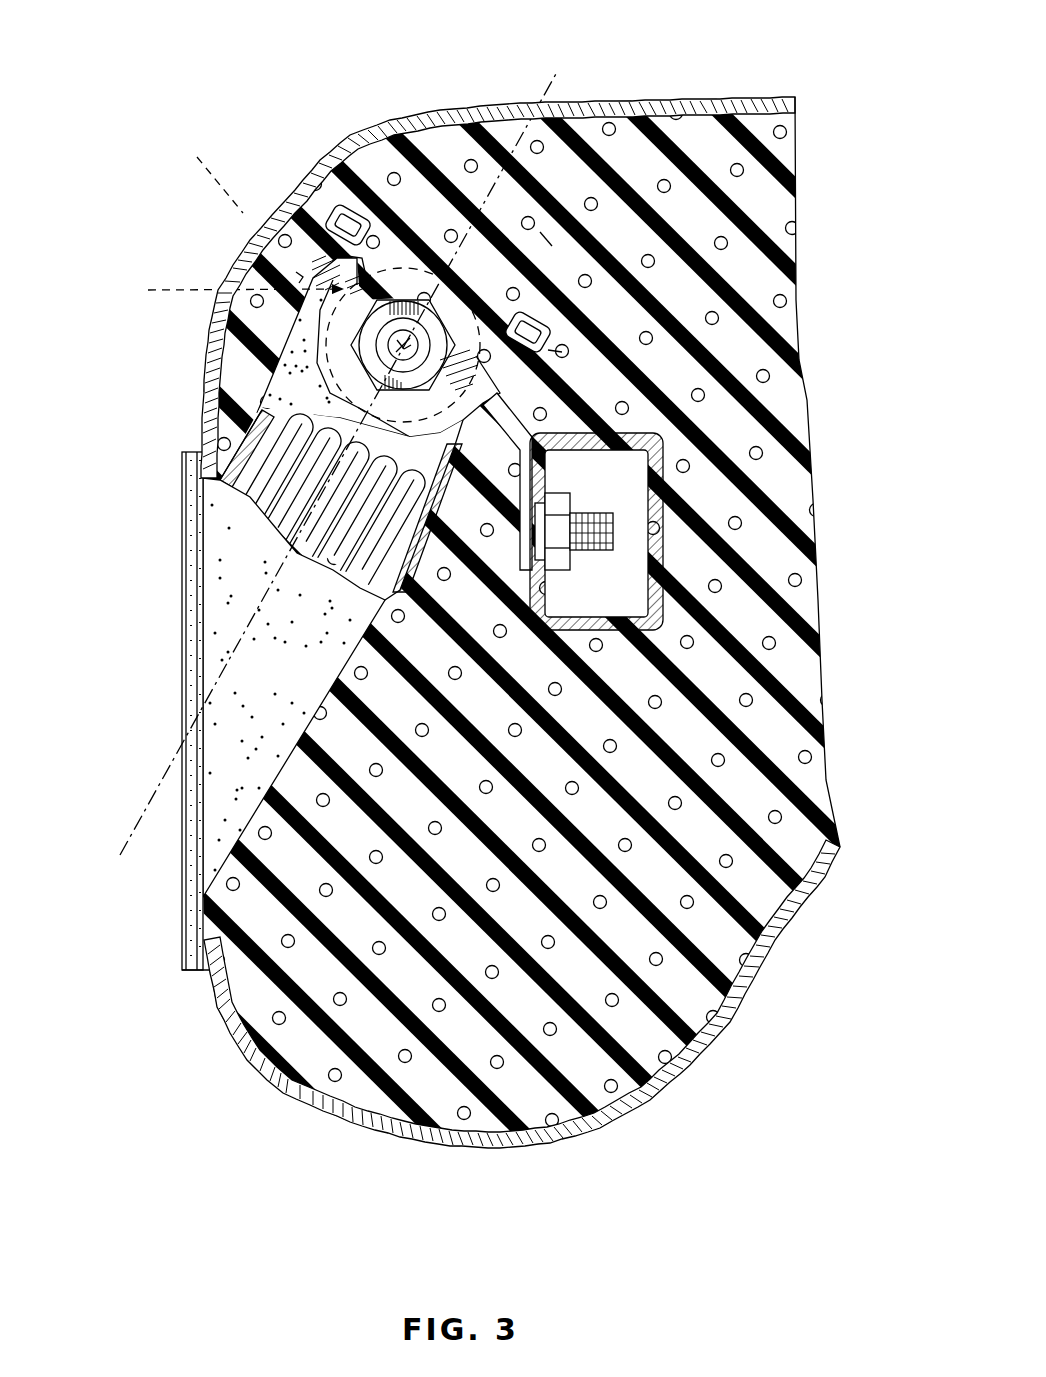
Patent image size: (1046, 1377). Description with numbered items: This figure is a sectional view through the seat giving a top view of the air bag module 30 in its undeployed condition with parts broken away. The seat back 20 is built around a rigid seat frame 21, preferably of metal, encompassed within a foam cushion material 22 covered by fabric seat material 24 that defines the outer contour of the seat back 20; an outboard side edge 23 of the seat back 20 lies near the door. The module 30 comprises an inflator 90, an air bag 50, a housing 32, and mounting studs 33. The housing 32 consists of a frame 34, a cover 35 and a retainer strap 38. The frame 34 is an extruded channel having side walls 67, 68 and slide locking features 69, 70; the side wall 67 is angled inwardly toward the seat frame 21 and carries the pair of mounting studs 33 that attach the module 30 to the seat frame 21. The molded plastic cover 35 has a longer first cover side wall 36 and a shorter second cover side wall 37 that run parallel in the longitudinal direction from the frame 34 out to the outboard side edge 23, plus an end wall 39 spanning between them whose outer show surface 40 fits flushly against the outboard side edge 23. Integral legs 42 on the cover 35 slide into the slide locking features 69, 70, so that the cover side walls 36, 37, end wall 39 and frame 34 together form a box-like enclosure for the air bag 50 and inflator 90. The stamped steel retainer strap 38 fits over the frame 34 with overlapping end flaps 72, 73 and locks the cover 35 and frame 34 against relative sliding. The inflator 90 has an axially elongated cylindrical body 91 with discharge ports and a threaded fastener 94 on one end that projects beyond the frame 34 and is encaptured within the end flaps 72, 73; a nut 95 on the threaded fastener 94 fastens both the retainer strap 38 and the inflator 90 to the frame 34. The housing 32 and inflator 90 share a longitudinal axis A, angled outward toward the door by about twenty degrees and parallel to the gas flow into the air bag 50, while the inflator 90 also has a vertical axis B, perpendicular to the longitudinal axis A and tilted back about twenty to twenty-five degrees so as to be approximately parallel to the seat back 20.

The seat back 20 is at (753, 94).
The seat frame 21 is at (662, 465).
The foam cushion material 22 is at (787, 325).
The outboard side edge 23 is at (205, 960).
The fabric seat material 24 is at (700, 97).
The air bag module 30 is at (170, 524).
The housing 32 is at (206, 612).
The mounting studs 33 is at (600, 530).
The frame 34 is at (338, 195).
The cover 35 is at (263, 381).
The first cover side wall 36 is at (385, 580).
The second cover side wall 37 is at (234, 466).
The retainer strap 38 is at (301, 276).
The end wall 39 is at (181, 663).
The outer show surface 40 is at (195, 714).
The integral legs 42 is at (352, 215).
The air bag 50 is at (270, 446).
The side wall 67 is at (505, 405).
The side wall 68 is at (367, 292).
The slide locking feature 69 is at (560, 350).
The slide locking feature 70 is at (362, 258).
The end flap 72 is at (545, 225).
The end flap 73 is at (318, 258).
The inflator 90 is at (205, 169).
The cylindrical body 91 is at (225, 288).
The threaded fastener 94 is at (438, 318).
The nut 95 is at (408, 333).
The longitudinal axis A is at (130, 800).
The vertical axis B is at (425, 304).